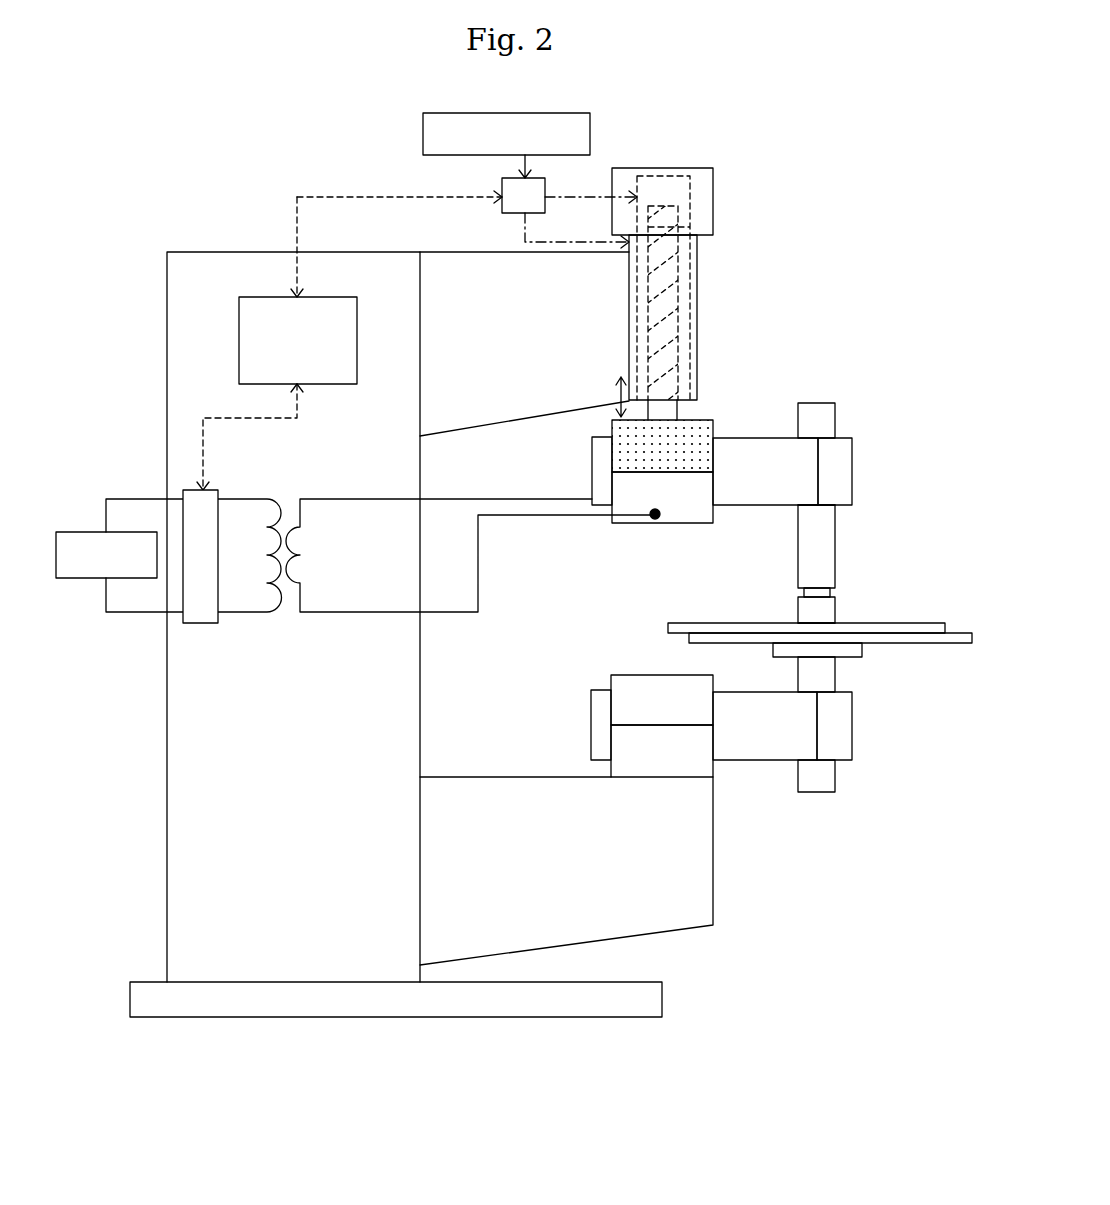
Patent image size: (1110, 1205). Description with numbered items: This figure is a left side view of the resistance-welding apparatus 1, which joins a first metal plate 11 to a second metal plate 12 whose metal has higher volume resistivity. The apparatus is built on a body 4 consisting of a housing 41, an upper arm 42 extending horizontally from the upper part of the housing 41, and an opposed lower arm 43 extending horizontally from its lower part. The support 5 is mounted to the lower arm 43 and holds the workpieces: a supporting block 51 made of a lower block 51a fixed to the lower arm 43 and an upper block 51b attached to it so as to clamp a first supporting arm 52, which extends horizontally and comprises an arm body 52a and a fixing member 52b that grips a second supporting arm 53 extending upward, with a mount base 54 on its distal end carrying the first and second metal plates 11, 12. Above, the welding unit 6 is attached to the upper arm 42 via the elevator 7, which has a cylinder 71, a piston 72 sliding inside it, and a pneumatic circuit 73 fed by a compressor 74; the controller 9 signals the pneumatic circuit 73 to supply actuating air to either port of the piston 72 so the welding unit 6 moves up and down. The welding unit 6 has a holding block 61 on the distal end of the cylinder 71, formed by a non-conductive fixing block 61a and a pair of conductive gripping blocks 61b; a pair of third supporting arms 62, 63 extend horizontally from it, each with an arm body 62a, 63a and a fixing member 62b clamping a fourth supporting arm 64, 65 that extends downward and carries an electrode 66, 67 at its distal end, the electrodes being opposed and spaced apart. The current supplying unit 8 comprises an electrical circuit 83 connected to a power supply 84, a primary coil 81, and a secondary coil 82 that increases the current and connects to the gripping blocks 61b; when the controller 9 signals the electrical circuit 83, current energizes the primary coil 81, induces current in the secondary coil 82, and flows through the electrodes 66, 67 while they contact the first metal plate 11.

The resistance-welding apparatus 1 is at (714, 118).
The body 4 is at (251, 231).
The housing 41 is at (205, 905).
The upper arm 42 is at (480, 265).
The lower arm 43 is at (700, 882).
The support 5 is at (589, 649).
The supporting block 51 is at (599, 726).
The lower block 51a is at (632, 754).
The upper block 51b is at (628, 696).
The first supporting arm 52 is at (795, 776).
The arm body 52a is at (774, 738).
The fixing member 52b is at (840, 735).
The second supporting arm 53 is at (823, 676).
The mount base 54 is at (788, 650).
The welding unit 6 is at (899, 409).
The holding block 61 is at (638, 461).
The fixing block 61a is at (703, 432).
The gripping block 61b is at (676, 515).
The third supporting arm 62 is at (787, 415).
The arm body 62a is at (775, 452).
The fixing member 62b is at (842, 452).
The third supporting arm 63 is at (771, 549).
The arm body 63a is at (812, 504).
The fourth supporting arm 64 is at (835, 533).
The fourth supporting arm 65 is at (836, 574).
The electrode 66 is at (805, 615).
The electrode 67 is at (836, 607).
The elevator 7 is at (767, 243).
The cylinder 71 is at (702, 210).
The piston 72 is at (697, 292).
The pneumatic circuit 73 is at (540, 182).
The compressor 74 is at (590, 136).
The current supplying unit 8 is at (147, 447).
The primary coil 81 is at (244, 490).
The secondary coil 82 is at (322, 497).
The electrical circuit 83 is at (207, 625).
The power supply 84 is at (91, 583).
The controller 9 is at (246, 351).
The first metal plate 11 is at (877, 625).
The second metal plate 12 is at (877, 640).